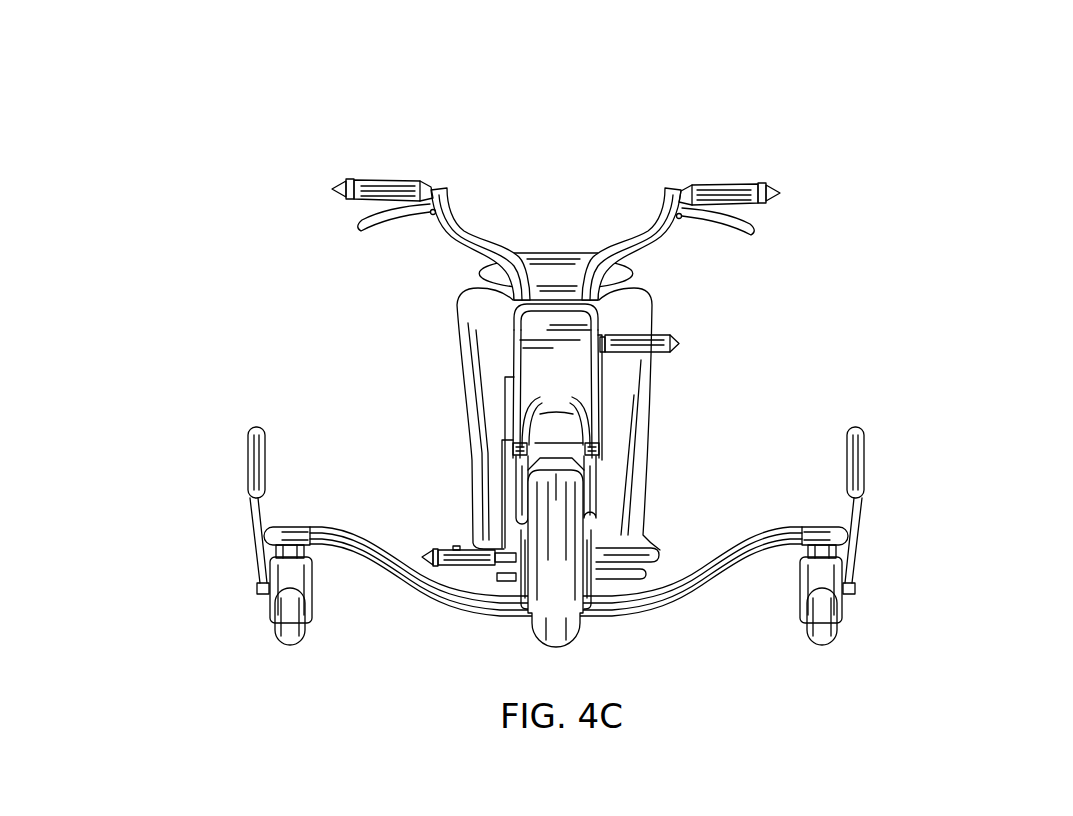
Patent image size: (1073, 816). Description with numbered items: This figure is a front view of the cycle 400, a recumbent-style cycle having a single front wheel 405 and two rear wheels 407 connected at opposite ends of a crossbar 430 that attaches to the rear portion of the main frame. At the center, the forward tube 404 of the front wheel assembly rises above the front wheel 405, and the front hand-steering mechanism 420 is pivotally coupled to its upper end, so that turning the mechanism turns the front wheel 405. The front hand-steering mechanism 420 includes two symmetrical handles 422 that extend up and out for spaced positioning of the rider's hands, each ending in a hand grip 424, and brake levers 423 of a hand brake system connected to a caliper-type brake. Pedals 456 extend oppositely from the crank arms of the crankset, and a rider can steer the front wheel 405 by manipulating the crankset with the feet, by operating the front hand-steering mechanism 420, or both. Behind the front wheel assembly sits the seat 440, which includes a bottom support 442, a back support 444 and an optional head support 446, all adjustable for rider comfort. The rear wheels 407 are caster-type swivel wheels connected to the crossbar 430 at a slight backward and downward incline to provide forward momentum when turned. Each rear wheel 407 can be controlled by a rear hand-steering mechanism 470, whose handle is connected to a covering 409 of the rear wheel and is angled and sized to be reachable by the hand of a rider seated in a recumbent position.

The cycle 400 is at (1019, 104).
The forward tube 404 is at (575, 376).
The front wheel 405 is at (537, 628).
The rear wheels 407 is at (272, 644).
The covering 409 is at (313, 587).
The front hand-steering mechanism 420 is at (551, 197).
The handles 422 is at (483, 227).
The brake levers 423 is at (733, 231).
The hand grips 424 is at (375, 180).
The crossbar 430 is at (687, 600).
The seat 440 is at (452, 430).
The bottom support 442 is at (655, 547).
The back support 444 is at (462, 376).
The head support 446 is at (480, 267).
The pedals 456 is at (670, 333).
The rear hand-steering mechanism 470 is at (250, 522).